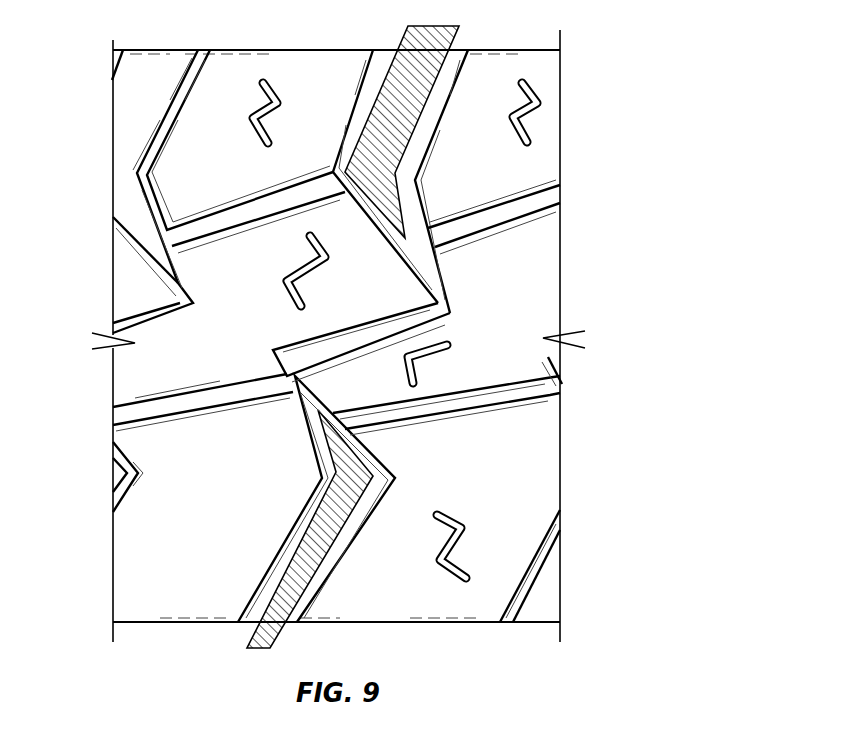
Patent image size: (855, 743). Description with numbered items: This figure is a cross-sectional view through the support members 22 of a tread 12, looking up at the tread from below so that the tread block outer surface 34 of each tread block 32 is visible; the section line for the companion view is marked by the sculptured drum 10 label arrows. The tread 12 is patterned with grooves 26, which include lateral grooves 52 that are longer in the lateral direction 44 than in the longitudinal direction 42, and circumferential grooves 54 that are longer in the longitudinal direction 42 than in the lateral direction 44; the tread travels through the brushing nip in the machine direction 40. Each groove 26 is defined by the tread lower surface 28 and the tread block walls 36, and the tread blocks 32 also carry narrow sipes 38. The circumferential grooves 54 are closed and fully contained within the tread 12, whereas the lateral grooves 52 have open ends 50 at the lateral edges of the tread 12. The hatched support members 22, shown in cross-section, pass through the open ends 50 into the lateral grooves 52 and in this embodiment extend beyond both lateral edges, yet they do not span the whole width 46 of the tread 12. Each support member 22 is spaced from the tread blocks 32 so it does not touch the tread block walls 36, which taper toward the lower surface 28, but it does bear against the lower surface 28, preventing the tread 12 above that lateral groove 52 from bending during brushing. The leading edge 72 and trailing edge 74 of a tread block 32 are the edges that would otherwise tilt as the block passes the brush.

The sculptured drum 10 is at (277, 553).
The tread 12 is at (520, 522).
The support member 22 is at (353, 473).
The groove 26 is at (302, 388).
The tread lower surface 28 is at (198, 393).
The tread block 32 is at (358, 394).
The tread block outer surface 34 is at (531, 487).
The tread block wall 36 is at (351, 332).
The sipe 38 is at (452, 547).
The machine direction 40 is at (738, 337).
The longitudinal direction 42 is at (615, 337).
The lateral direction 44 is at (599, 285).
The width 46 is at (113, 50).
The open end 50 is at (393, 50).
The lateral groove 52 is at (368, 518).
The circumferential groove 54 is at (492, 215).
The leading edge 72 is at (387, 242).
The trailing edge 74 is at (175, 275).